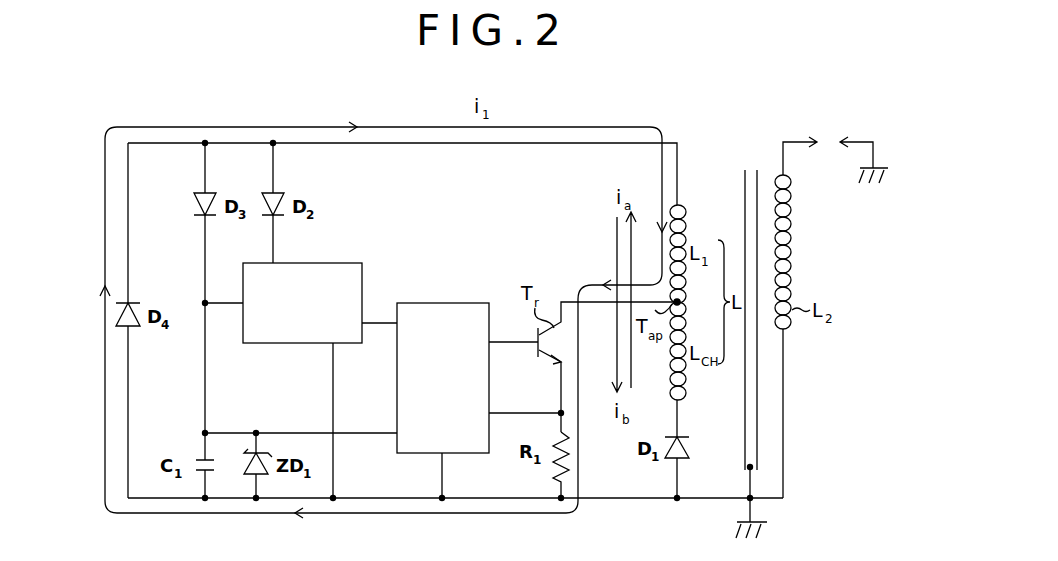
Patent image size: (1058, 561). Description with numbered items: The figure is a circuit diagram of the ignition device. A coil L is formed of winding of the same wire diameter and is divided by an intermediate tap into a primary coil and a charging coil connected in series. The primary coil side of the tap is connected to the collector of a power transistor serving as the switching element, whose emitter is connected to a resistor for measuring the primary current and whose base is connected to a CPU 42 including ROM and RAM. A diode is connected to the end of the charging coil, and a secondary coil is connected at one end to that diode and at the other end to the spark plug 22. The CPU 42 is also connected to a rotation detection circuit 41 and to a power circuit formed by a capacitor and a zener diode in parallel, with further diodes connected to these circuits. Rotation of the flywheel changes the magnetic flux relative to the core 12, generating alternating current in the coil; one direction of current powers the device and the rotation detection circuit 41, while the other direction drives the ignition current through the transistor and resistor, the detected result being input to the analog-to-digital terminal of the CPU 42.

The core 12 is at (756, 171).
The spark plug 22 is at (830, 140).
The rotation detection circuit 41 is at (347, 262).
The CPU 42 is at (443, 303).